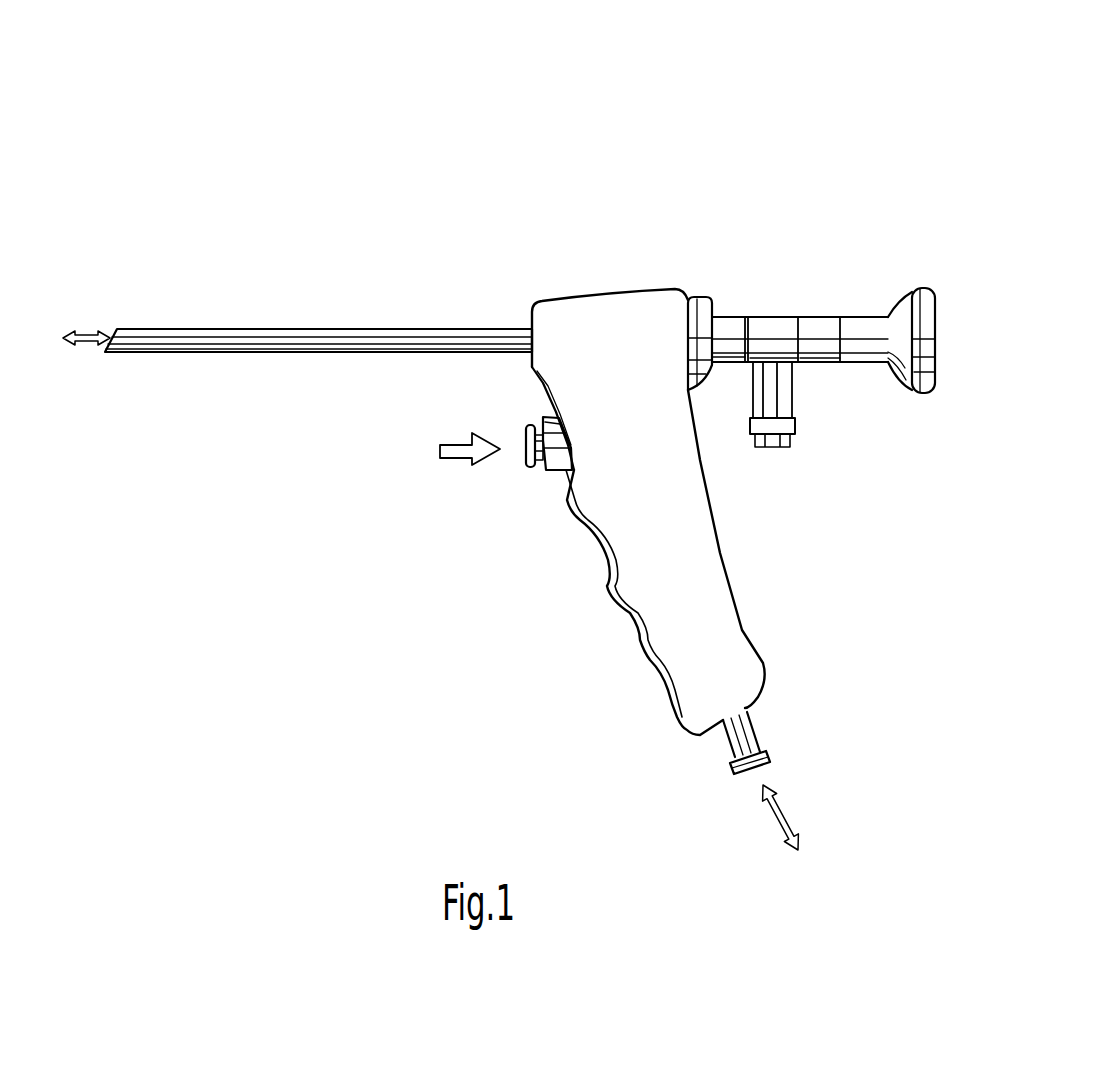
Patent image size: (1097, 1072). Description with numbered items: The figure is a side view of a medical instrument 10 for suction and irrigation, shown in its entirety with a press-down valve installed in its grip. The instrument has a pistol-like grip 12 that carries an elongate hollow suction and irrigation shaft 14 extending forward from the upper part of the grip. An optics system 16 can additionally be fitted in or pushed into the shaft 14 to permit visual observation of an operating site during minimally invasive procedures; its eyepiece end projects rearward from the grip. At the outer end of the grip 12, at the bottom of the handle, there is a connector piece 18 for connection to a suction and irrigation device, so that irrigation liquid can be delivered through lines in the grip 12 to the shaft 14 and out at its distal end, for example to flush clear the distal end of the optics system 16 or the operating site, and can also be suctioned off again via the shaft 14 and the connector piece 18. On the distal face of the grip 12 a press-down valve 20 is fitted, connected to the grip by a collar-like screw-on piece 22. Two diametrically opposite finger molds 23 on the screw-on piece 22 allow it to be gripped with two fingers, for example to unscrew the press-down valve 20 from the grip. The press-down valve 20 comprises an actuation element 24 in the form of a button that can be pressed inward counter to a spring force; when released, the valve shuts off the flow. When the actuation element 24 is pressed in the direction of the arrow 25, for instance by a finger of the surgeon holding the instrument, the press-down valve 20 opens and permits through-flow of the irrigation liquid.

The medical instrument 10 is at (628, 160).
The grip 12 is at (705, 573).
The suction and irrigation shaft 14 is at (350, 340).
The optics system 16 is at (862, 328).
The connector piece 18 is at (747, 737).
The press-down valve 20 is at (508, 505).
The screw-on piece 22 is at (552, 473).
The finger molds 23 is at (547, 420).
The actuation element 24 is at (527, 452).
The arrow 25 is at (455, 445).